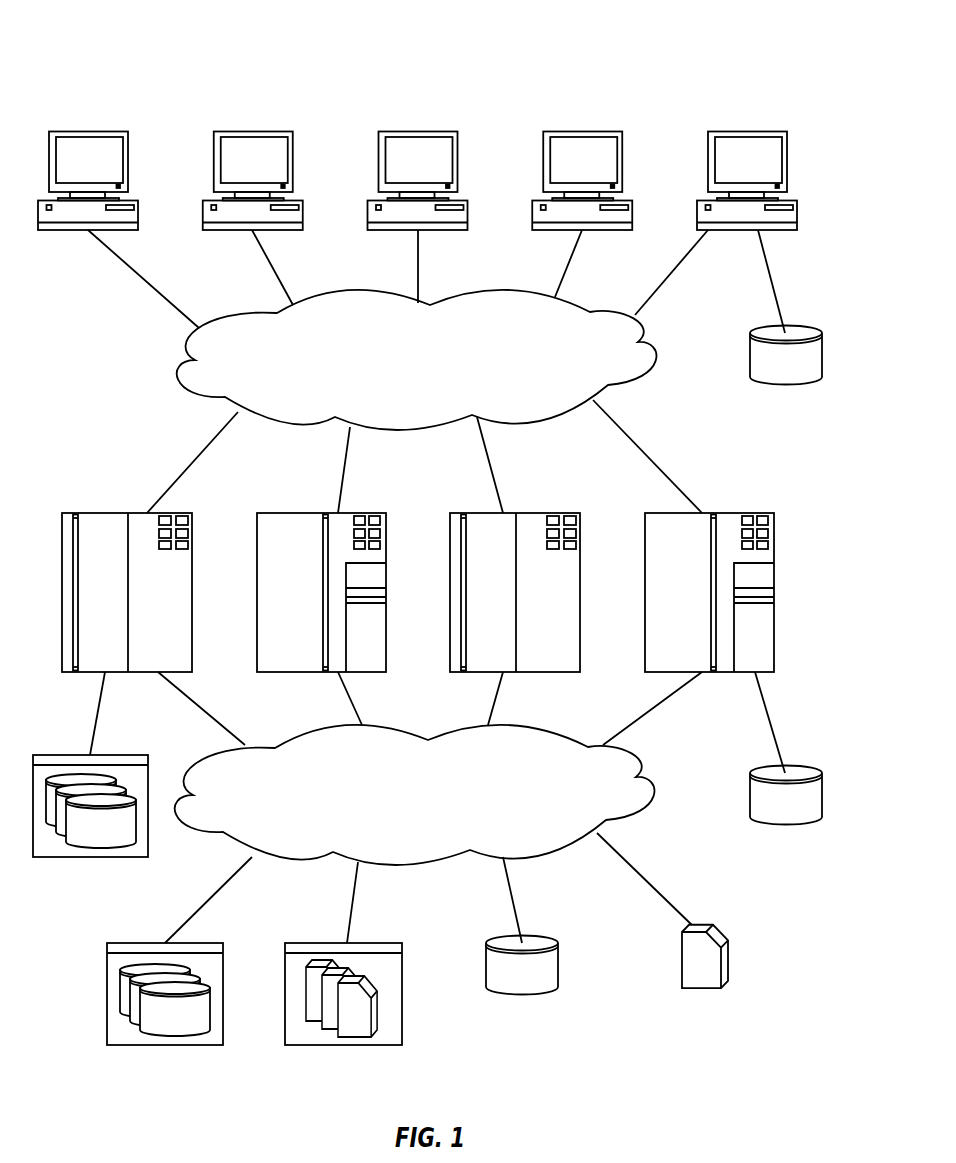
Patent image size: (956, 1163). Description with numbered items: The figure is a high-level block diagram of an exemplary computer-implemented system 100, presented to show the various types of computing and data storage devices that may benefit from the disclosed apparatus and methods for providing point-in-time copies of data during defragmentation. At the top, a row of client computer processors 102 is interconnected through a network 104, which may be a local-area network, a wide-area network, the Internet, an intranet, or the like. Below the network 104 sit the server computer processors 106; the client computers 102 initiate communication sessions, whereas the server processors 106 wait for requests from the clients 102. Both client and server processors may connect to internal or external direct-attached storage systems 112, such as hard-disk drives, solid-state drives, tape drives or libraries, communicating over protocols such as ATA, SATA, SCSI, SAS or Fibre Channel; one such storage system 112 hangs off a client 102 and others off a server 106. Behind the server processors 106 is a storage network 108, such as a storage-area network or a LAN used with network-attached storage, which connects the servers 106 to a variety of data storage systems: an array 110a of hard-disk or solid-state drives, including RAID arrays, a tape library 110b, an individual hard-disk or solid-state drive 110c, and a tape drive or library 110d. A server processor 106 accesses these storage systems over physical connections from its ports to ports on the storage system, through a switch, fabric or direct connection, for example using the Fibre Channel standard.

The computer-implemented system 100 is at (140, 48).
The client computer processor 102 is at (108, 170).
The network 104 is at (437, 388).
The server computer processor 106 is at (122, 600).
The storage network 108 is at (437, 822).
The array of hard-disk drives or solid-state drives 110a is at (165, 1045).
The tape library 110b is at (345, 1045).
The individual hard-disk drive or solid-state drive 110c is at (523, 990).
The tape drive or library 110d is at (703, 992).
The direct-attached storage system 112 is at (795, 382).